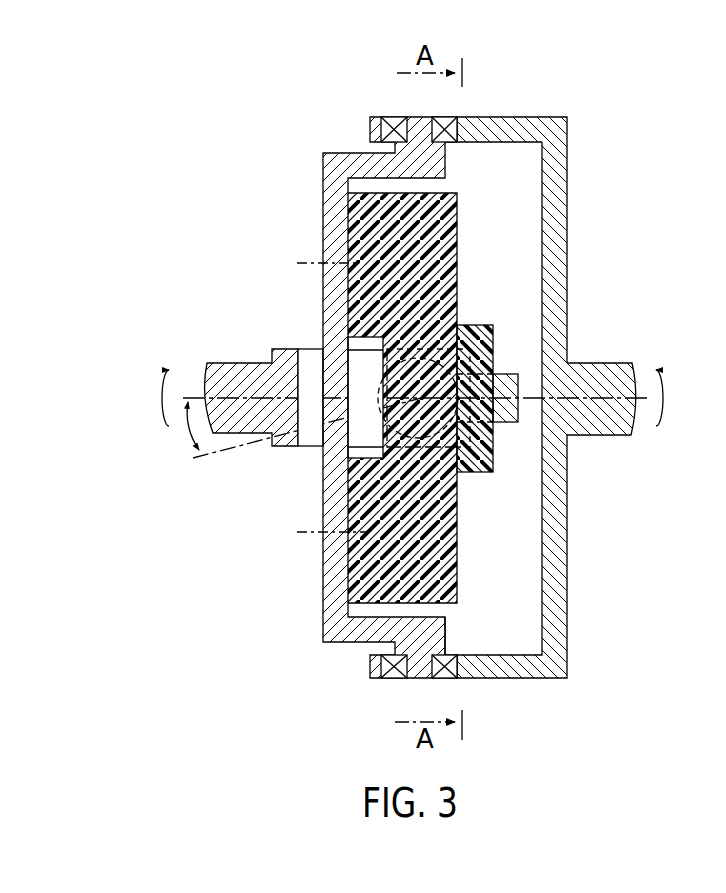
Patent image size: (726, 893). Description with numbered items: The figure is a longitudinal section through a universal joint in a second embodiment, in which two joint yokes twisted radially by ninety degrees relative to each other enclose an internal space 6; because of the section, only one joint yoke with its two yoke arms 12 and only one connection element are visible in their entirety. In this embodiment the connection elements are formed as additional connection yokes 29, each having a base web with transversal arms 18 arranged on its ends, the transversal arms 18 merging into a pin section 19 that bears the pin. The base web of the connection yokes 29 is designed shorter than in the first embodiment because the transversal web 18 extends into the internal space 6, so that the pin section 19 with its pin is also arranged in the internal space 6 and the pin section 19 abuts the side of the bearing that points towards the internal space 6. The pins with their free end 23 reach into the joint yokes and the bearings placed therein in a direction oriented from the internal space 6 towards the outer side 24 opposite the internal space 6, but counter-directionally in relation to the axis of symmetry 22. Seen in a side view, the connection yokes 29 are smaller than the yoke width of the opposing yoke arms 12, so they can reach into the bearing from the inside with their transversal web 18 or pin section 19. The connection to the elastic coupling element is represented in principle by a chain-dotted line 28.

The internal space 6 is at (525, 548).
The yoke arm 12 is at (533, 128).
The transversal arm 18 is at (358, 635).
The pin section 19 is at (440, 643).
The axis of symmetry 22 is at (590, 373).
The free end 23 is at (417, 680).
The outer side 24 is at (480, 117).
The chain-dotted line 28 is at (305, 532).
The connection yoke 29 is at (298, 397).